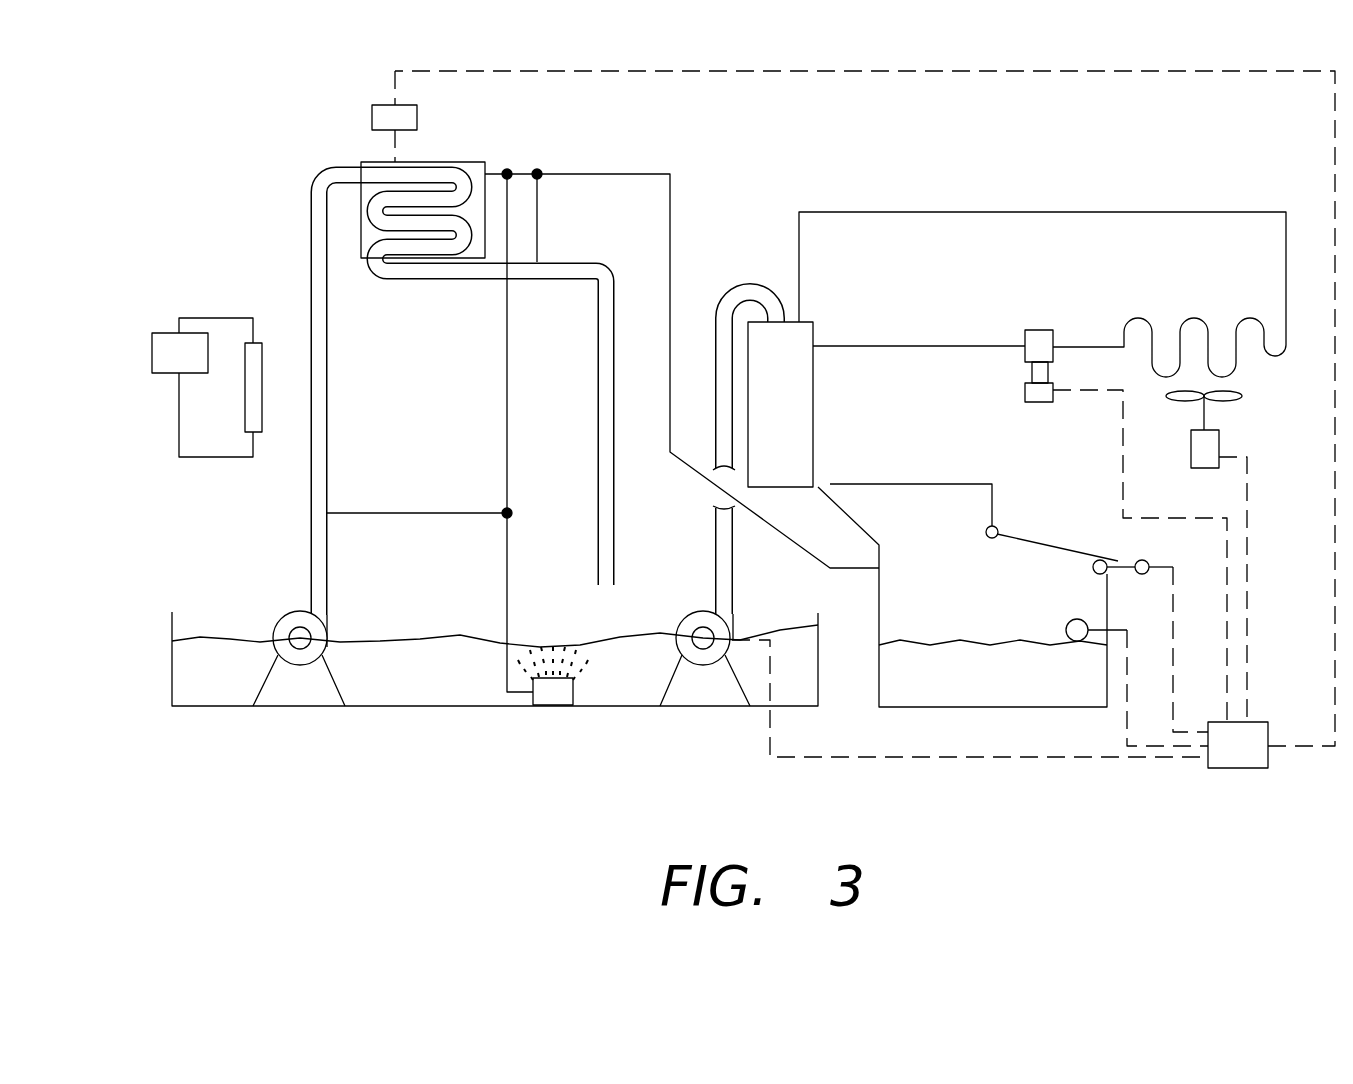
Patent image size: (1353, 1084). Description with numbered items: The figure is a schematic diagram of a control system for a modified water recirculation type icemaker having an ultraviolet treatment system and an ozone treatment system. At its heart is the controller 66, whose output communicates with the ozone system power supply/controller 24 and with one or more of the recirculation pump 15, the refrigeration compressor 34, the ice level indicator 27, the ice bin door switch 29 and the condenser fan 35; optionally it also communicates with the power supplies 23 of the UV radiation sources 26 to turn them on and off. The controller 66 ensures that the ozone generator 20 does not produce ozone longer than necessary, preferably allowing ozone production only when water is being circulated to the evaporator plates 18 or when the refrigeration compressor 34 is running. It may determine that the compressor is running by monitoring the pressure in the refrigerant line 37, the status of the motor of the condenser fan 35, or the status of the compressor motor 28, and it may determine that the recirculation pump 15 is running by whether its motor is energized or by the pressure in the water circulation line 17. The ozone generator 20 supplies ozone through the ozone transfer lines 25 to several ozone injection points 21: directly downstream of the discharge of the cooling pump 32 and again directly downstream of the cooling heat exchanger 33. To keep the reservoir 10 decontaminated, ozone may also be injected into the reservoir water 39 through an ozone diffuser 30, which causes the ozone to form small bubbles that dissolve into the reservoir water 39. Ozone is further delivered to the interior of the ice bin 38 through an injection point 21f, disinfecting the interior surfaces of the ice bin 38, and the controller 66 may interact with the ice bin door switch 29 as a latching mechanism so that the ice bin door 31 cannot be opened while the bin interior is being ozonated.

The reservoir 10 is at (427, 708).
The recirculation pump 15 is at (693, 688).
The water circulation line 17 is at (745, 283).
The evaporator plates 18 is at (813, 405).
The ozone generator 20 is at (445, 162).
The ozone injection points 21 is at (537, 258).
The injection point into the ice bin 21f is at (882, 548).
The power supplies of the UV radiation sources 23 is at (160, 333).
The ozone system power supply/controller 24 is at (372, 112).
The ozone transfer lines 25 is at (580, 174).
The UV radiation sources 26 is at (245, 410).
The ice level indicator 27 is at (1066, 622).
The compressor motor 28 is at (1037, 402).
The ice bin door switch 29 is at (1150, 560).
The ozone diffuser 30 is at (538, 708).
The ice bin door 31 is at (1070, 552).
The cooling pump 32 is at (305, 685).
The cooling heat exchanger 33 is at (362, 262).
The refrigeration compressor 34 is at (1025, 350).
The condenser fan 35 is at (1210, 420).
The refrigerant line 37 is at (1095, 346).
The ice bin 38 is at (1023, 550).
The reservoir water 39 is at (190, 675).
The controller 66 is at (1262, 722).